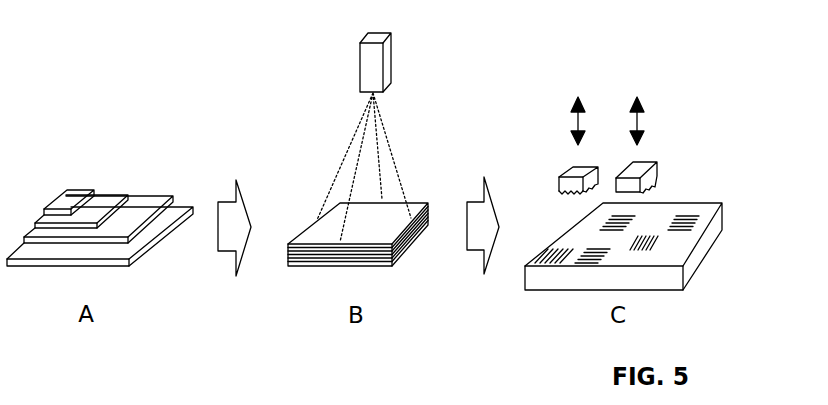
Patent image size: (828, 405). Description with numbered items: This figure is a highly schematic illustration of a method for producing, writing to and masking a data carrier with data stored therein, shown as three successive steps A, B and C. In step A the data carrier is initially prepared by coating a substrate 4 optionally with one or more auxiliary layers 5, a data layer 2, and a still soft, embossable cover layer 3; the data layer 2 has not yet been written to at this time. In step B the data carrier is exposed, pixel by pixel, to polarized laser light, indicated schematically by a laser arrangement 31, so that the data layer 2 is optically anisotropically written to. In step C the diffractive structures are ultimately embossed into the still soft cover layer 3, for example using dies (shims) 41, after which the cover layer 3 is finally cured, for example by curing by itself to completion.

The data layer 2 is at (101, 202).
The cover layer 3 is at (78, 192).
The substrate 4 is at (180, 211).
The auxiliary layers 5 is at (139, 213).
The laser arrangement 31 is at (385, 55).
The dies (shims) 41 is at (567, 173).